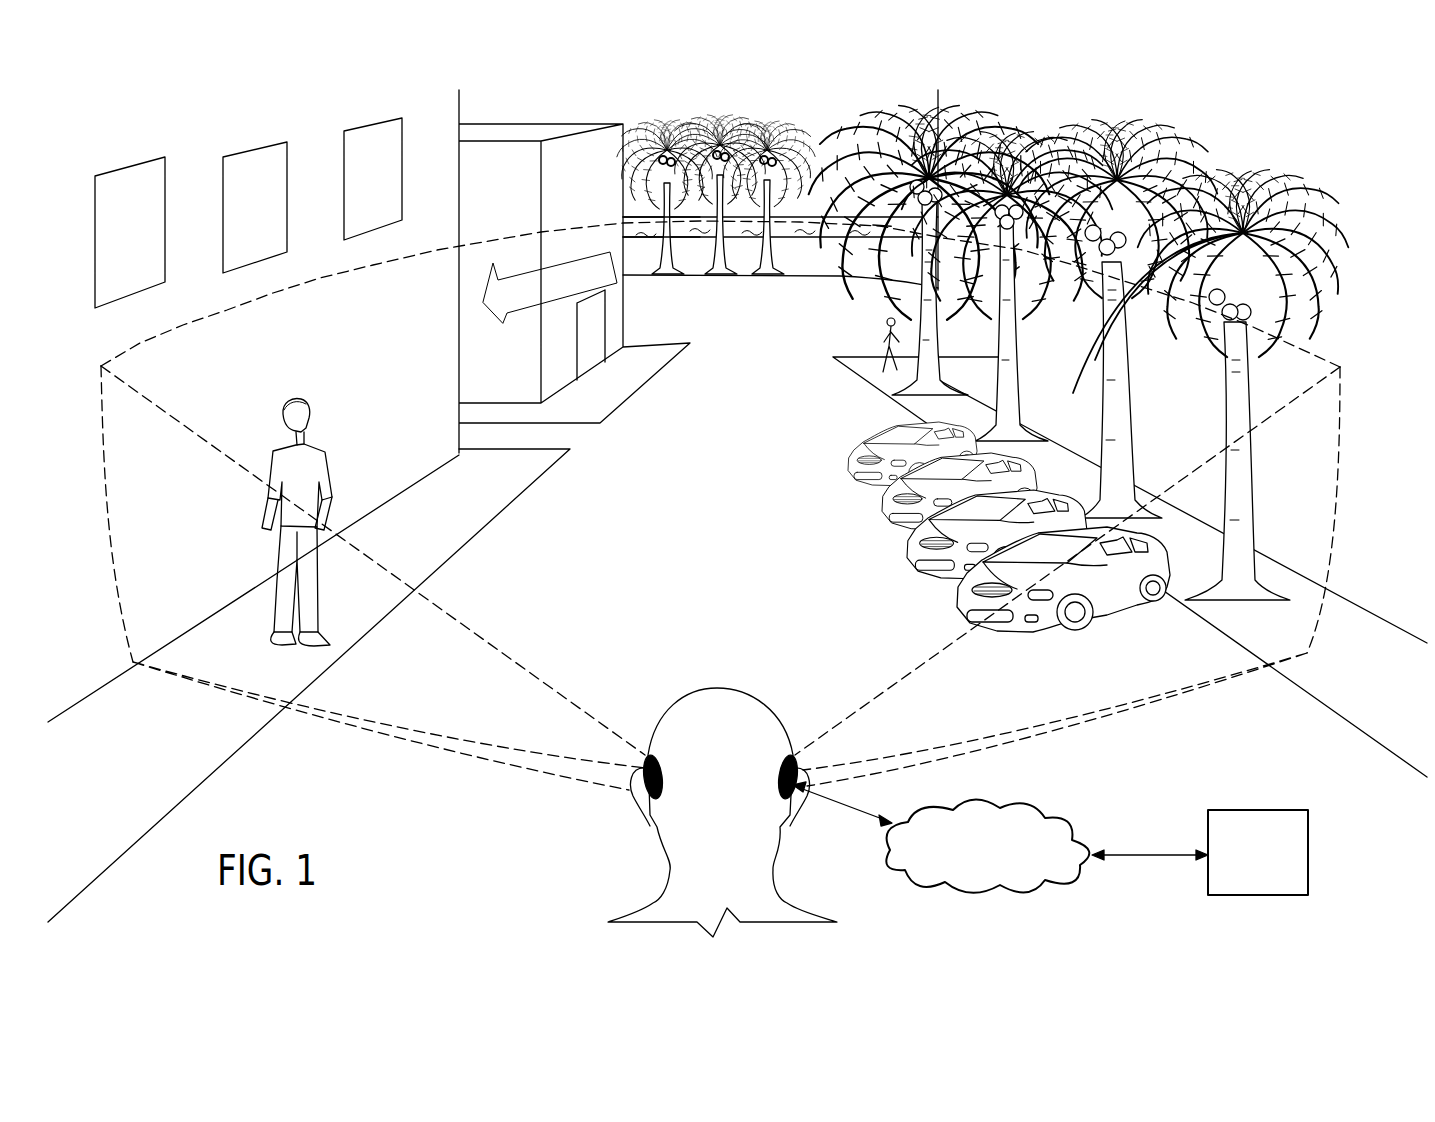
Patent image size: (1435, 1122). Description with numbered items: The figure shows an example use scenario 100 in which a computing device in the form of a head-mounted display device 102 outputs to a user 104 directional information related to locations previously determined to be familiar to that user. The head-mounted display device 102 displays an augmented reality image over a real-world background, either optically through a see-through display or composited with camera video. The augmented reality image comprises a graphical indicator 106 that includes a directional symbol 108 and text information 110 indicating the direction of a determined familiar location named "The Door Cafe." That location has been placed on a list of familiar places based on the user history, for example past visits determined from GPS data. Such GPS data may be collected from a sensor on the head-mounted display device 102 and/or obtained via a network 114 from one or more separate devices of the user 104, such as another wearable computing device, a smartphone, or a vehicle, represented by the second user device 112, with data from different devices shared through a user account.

The use scenario 100 is at (1276, 151).
The head-mounted display device 102 is at (647, 822).
The user 104 is at (722, 812).
The graphical indicator 106 is at (652, 312).
The directional symbol 108 is at (563, 263).
The text information 110 is at (663, 290).
The User Device 2 112 is at (1257, 810).
The network 114 is at (987, 845).